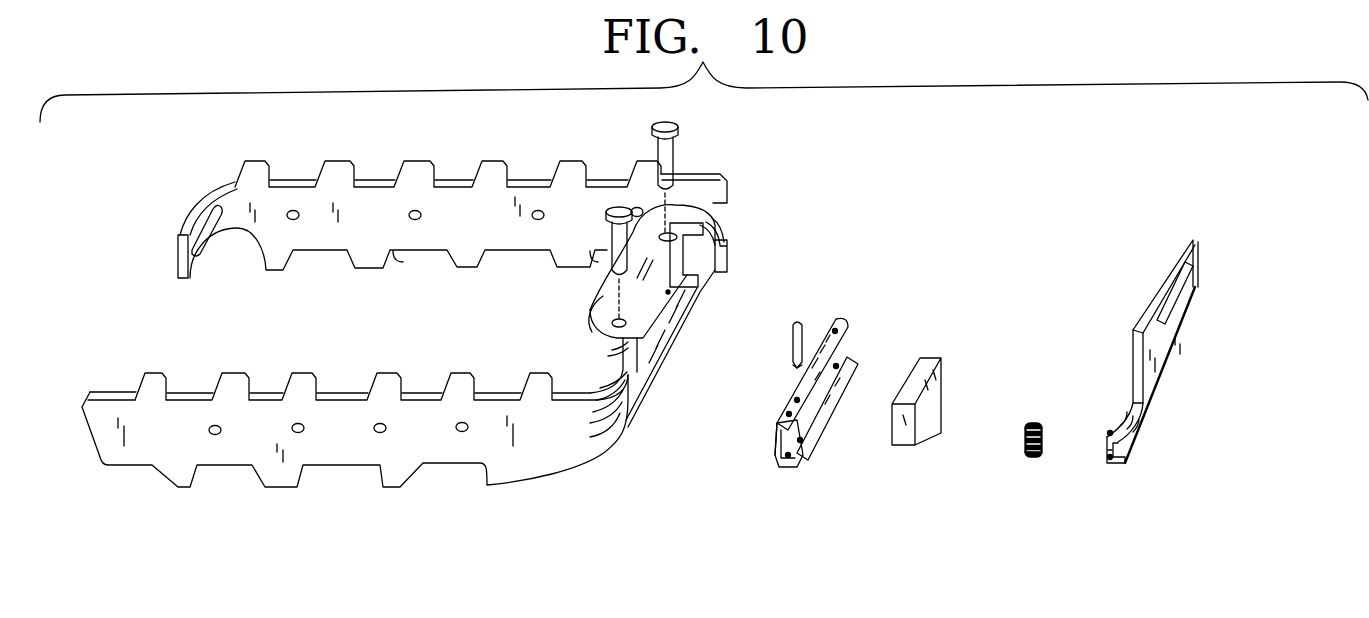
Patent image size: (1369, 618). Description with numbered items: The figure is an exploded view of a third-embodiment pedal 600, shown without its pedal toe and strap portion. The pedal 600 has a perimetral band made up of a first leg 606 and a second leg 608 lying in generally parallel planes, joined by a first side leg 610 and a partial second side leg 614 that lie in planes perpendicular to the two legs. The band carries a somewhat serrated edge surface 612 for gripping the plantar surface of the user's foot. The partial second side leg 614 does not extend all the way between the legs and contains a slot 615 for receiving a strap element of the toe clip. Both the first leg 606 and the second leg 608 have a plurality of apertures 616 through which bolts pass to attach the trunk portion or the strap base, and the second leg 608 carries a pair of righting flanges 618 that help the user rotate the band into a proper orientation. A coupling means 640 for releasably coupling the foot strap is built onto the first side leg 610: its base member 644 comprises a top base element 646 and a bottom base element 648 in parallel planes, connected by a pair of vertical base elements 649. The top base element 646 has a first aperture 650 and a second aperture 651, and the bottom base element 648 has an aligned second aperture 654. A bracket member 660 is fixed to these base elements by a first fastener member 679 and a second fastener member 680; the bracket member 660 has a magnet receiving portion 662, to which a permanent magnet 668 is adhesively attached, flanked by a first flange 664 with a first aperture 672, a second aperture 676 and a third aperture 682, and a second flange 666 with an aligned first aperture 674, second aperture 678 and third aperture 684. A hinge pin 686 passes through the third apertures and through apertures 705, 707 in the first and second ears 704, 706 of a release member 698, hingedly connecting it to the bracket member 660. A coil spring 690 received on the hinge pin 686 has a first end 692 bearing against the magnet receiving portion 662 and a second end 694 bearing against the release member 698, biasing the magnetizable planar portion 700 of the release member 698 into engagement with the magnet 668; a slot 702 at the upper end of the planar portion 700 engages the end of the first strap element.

The pedal 600 is at (759, 151).
The first leg 606 is at (207, 499).
The second leg 608 is at (290, 294).
The first side leg 610 is at (733, 487).
The serrated edge surface 612 is at (438, 161).
The partial second side leg 614 is at (155, 252).
The slot 615 is at (202, 262).
The apertures 616 is at (422, 214).
The righting flanges 618 is at (405, 264).
The coupling means 640 is at (1052, 543).
The base member 644 is at (564, 300).
The top base element 646 is at (594, 356).
The bottom base element 648 is at (660, 350).
The vertical base elements 649 is at (628, 400).
The first aperture of top base element 650 is at (606, 323).
The second aperture of top base element 651 is at (712, 252).
The second aperture of bottom base element 654 is at (670, 293).
The bracket member 660 is at (960, 227).
The magnet receiving portion 662 is at (778, 462).
The first flange 664 is at (871, 302).
The second flange 666 is at (865, 339).
The permanent magnet 668 is at (957, 340).
The first aperture of first flange 672 is at (784, 416).
The first aperture of second flange 674 is at (795, 457).
The second aperture of first flange 676 is at (833, 329).
The second aperture of second flange 678 is at (837, 369).
The first fastener member 679 is at (604, 222).
The second fastener member 680 is at (677, 152).
The third aperture of first flange 682 is at (795, 398).
The third aperture of second flange 684 is at (803, 440).
The hinge pin 686 is at (785, 336).
The coil spring 690 is at (1030, 459).
The first end of spring 692 is at (1024, 440).
The second end of spring 694 is at (1034, 459).
The release member 698 is at (1284, 227).
The planar portion 700 is at (1175, 358).
The slot 702 is at (1197, 240).
The first ear 704 is at (1118, 412).
The aperture of first ear 705 is at (1108, 432).
The second ear 706 is at (1120, 464).
The aperture of second ear 707 is at (1108, 452).